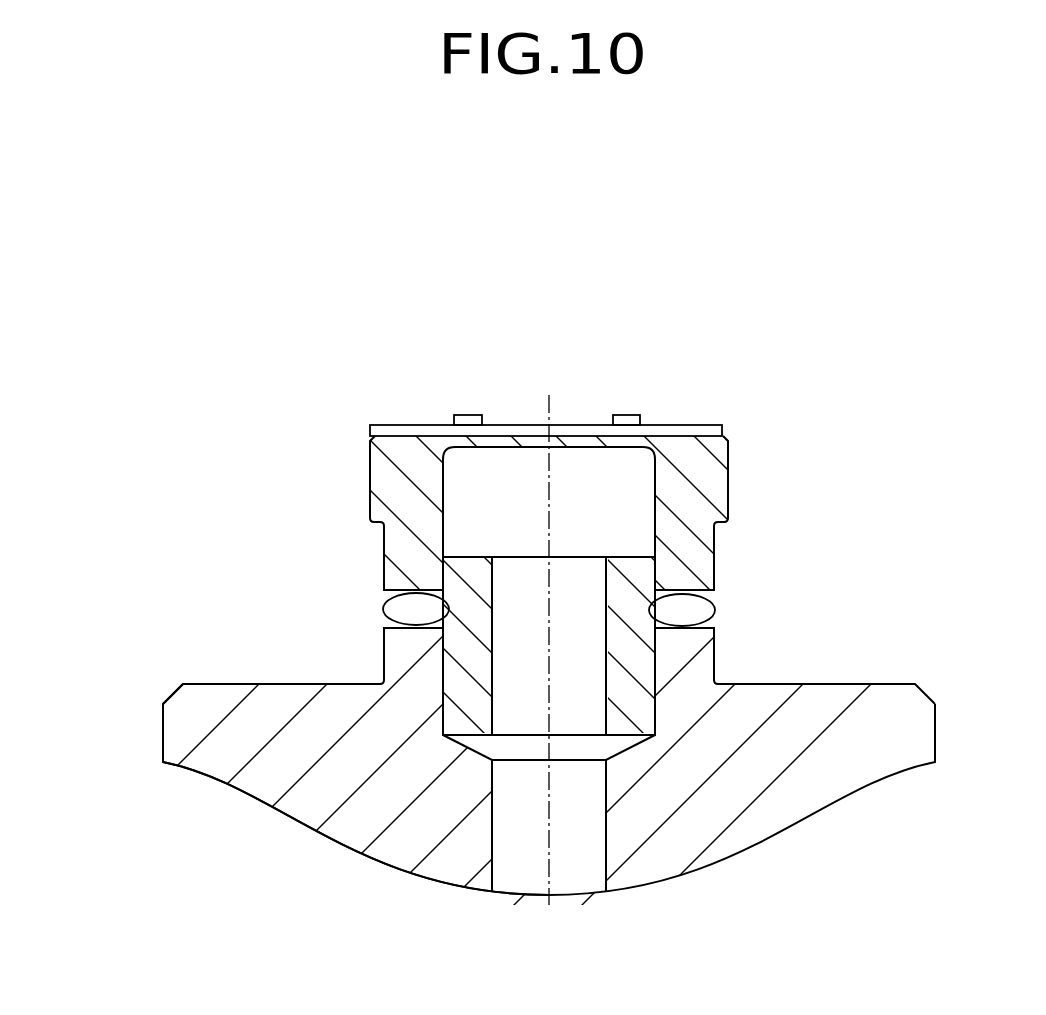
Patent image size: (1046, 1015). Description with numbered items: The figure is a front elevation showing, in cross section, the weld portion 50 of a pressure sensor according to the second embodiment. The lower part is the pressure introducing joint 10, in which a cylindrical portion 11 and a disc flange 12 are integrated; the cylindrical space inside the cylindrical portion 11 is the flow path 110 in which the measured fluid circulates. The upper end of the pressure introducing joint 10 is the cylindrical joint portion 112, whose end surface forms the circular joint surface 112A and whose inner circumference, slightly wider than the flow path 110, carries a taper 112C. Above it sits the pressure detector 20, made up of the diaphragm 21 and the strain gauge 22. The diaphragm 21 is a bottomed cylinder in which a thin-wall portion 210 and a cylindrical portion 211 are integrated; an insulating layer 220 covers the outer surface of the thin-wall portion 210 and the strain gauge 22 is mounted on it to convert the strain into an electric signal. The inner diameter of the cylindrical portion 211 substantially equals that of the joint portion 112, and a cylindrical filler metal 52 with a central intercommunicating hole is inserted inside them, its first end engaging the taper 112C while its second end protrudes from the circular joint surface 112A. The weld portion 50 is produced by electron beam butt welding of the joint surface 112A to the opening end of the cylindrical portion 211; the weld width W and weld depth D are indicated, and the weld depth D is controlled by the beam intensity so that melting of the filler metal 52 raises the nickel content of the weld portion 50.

The pressure introducing joint 10 is at (668, 845).
The cylindrical portion 11 is at (687, 677).
The disc flange 12 is at (252, 743).
The pressure detector 20 is at (838, 422).
The diaphragm 21 is at (717, 487).
The strain gauge 22 is at (468, 412).
The weld portion 50 is at (358, 607).
The cylindrical filler metal 52 is at (452, 696).
The flow path 110 is at (500, 846).
The joint portion 112 is at (407, 658).
The circular joint surface 112A is at (390, 631).
The taper 112C is at (477, 757).
The thin-wall portion 210 is at (463, 442).
The cylindrical portion 211 is at (400, 526).
The insulating layer 220 is at (517, 425).
The weld width W is at (714, 589).
The weld depth D is at (646, 617).